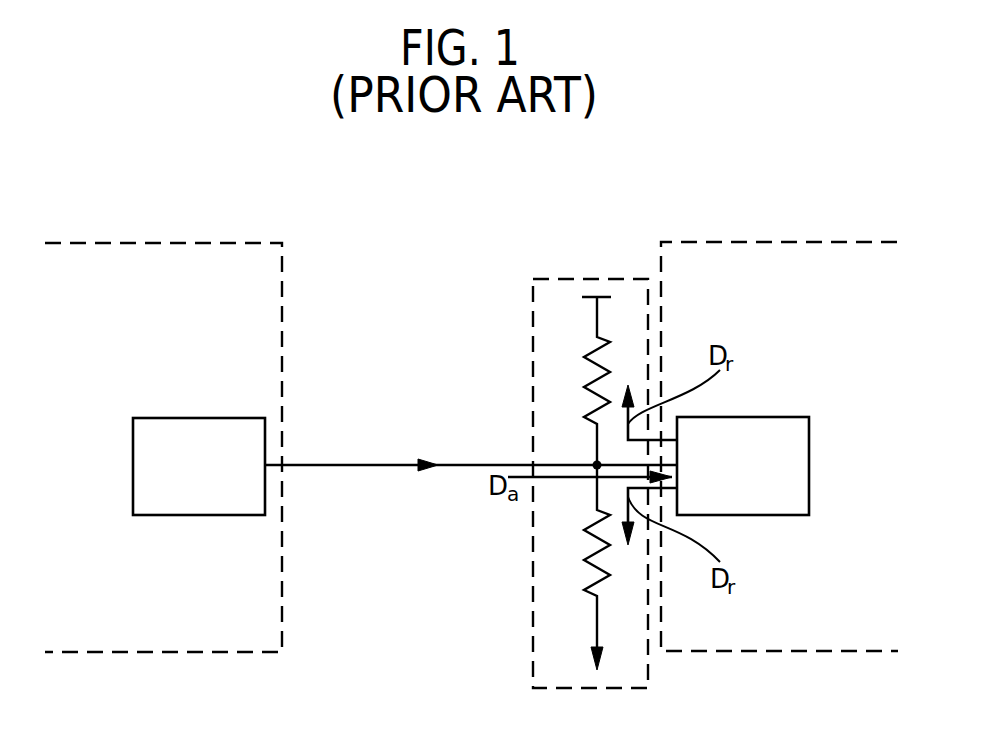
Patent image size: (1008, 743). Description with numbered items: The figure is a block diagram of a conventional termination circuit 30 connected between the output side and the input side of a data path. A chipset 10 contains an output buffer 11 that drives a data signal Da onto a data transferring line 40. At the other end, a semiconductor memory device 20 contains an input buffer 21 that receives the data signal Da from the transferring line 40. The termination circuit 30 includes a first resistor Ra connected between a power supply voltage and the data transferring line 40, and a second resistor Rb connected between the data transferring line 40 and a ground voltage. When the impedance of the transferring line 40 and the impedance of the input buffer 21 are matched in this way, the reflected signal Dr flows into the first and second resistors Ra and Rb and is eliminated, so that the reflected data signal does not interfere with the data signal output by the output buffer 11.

The chipset 10 is at (225, 243).
The output buffer 11 is at (210, 418).
The semiconductor memory device 20 is at (838, 242).
The input buffer 21 is at (754, 417).
The termination circuit 30 is at (583, 279).
The data transferring line 40 is at (455, 465).